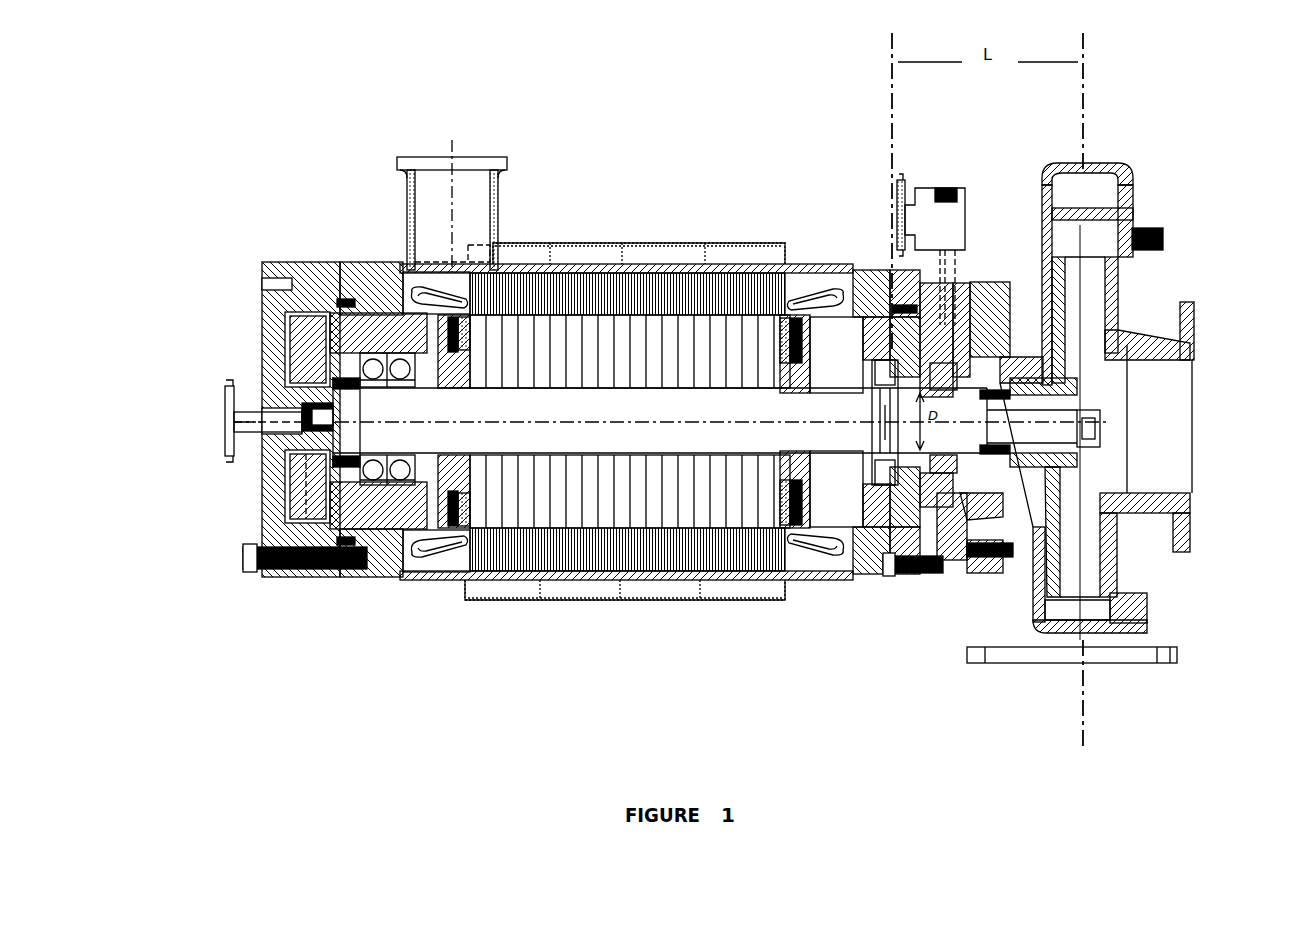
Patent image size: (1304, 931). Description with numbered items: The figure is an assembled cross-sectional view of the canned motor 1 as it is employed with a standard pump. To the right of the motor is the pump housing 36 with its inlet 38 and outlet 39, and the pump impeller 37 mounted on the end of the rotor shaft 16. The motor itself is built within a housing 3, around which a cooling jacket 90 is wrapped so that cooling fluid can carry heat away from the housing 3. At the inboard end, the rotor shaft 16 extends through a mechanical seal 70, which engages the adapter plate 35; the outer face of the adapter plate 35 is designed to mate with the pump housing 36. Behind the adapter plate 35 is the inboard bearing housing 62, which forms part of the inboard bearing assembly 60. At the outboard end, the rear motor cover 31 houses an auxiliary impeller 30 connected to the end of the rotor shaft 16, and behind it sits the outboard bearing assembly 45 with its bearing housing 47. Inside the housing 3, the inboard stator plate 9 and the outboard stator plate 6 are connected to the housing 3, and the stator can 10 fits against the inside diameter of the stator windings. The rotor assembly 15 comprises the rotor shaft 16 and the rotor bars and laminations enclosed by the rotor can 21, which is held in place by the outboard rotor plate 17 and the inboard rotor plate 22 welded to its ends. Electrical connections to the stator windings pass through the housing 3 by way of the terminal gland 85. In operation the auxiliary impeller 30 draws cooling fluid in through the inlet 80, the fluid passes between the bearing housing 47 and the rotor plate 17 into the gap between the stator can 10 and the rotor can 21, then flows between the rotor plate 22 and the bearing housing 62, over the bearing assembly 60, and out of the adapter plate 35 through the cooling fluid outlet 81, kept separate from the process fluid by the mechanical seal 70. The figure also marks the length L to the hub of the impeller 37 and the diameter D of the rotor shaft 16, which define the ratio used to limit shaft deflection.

The canned motor 1 is at (679, 130).
The housing 3 is at (847, 318).
The outboard stator plate 6 is at (380, 262).
The inboard stator plate 9 is at (886, 574).
The stator can 10 is at (742, 585).
The rotor assembly 15 is at (630, 340).
The rotor shaft 16 is at (716, 422).
The outboard rotor plate 17 is at (433, 278).
The rotor can 21 is at (688, 335).
The inboard rotor plate 22 is at (813, 467).
The auxiliary impeller 30 is at (292, 493).
The rear motor cover 31 is at (318, 262).
The adapter plate 35 is at (979, 282).
The pump housing 36 is at (1105, 163).
The pump impeller 37 is at (1093, 377).
The inlet 38 is at (1210, 432).
The outlet 39 is at (1078, 665).
The outboard bearing assembly 45 is at (398, 457).
The bearing housing 47 is at (378, 577).
The inboard bearing assembly 60 is at (860, 372).
The inboard bearing housing 62 is at (878, 485).
The mechanical seal 70 is at (975, 505).
The inlet 80 is at (225, 420).
The cooling fluid outlet 81 is at (943, 188).
The terminal gland 85 is at (498, 190).
The cooling jacket 90 is at (640, 605).